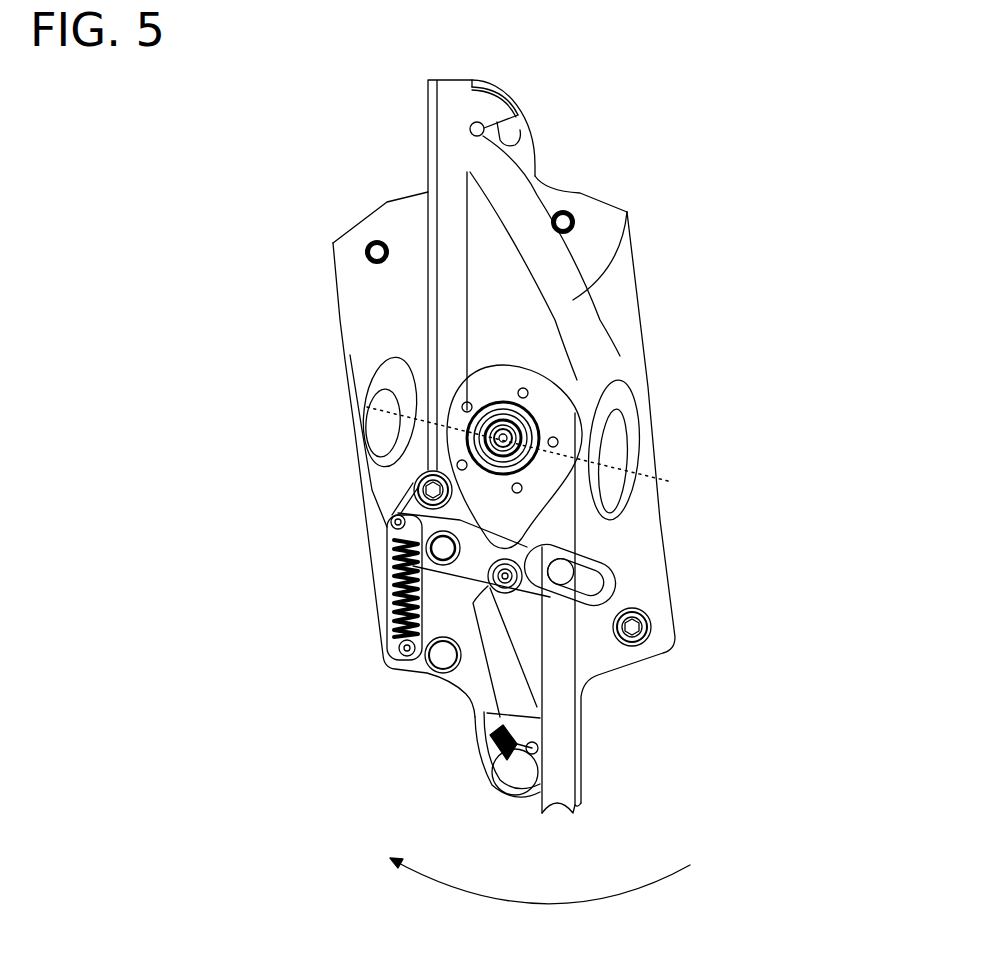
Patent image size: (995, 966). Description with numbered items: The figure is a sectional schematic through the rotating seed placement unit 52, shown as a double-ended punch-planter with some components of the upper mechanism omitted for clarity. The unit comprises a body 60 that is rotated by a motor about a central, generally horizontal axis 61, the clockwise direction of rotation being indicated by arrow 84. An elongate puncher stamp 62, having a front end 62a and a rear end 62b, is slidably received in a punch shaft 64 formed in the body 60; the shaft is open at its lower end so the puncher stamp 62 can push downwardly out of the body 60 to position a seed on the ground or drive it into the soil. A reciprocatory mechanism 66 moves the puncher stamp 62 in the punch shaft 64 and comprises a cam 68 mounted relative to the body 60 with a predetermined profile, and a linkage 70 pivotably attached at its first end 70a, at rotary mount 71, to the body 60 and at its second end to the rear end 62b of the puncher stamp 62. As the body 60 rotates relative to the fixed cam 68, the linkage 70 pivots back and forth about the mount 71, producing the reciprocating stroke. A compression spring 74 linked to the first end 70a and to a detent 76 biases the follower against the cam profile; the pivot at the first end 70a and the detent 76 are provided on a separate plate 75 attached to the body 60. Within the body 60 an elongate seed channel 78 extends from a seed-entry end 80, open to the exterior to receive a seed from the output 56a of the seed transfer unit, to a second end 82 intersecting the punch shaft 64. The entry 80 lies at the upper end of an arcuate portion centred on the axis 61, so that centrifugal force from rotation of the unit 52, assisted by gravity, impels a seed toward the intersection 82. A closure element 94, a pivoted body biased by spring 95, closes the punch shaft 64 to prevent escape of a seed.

The seed placement unit 52 is at (740, 218).
The output of seed transfer unit 56a is at (377, 408).
The body 60 is at (400, 232).
The axis 61 is at (503, 438).
The puncher stamp 62 is at (560, 700).
The front end 62a is at (563, 805).
The rear end 62b is at (563, 577).
The punch shaft 64 is at (443, 282).
The reciprocatory mechanism 66 is at (585, 440).
The cam 68 is at (538, 388).
The linkage 70 is at (390, 594).
The first end of linkage 70a is at (398, 513).
The rotary mount 71 is at (505, 578).
The compression spring 74 is at (440, 553).
The plate 75 is at (420, 620).
The detent 76 is at (440, 660).
The seed channel 78 is at (577, 300).
The seed-entry end 80 is at (392, 373).
The second end of seed channel 82 is at (475, 153).
The arrow 84 is at (480, 897).
The closure element 94 is at (517, 780).
The spring 95 is at (490, 752).